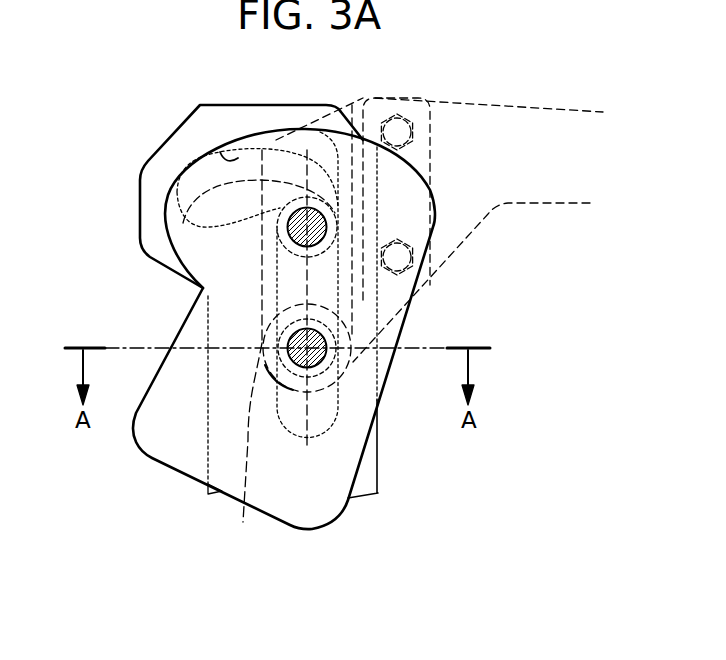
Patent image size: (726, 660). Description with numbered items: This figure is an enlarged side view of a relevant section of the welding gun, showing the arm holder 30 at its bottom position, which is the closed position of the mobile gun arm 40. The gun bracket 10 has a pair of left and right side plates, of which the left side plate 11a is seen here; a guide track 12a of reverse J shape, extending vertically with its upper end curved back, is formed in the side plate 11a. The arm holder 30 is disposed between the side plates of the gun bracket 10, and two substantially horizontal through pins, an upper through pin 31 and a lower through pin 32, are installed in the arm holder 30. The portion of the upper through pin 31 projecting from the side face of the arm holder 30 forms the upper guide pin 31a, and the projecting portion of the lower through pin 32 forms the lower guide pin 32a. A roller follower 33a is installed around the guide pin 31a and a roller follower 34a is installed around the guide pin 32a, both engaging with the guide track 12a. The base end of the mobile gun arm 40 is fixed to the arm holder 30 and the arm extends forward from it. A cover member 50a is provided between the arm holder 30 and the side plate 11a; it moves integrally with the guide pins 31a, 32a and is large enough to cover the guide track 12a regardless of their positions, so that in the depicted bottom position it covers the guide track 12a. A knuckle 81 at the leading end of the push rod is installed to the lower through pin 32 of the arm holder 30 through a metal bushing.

The gun bracket 10 is at (277, 306).
The side plate 11a is at (168, 153).
The guide track 12a is at (239, 158).
The arm holder 30 is at (262, 293).
The through pin 31 is at (444, 206).
The guide pin 31a is at (325, 237).
The through pin 32 is at (383, 316).
The guide pin 32a is at (318, 361).
The roller follower 33a is at (337, 213).
The roller follower 34a is at (345, 330).
The mobile gun arm 40 is at (531, 124).
The cover member 50a is at (168, 452).
The knuckle 81 is at (244, 448).